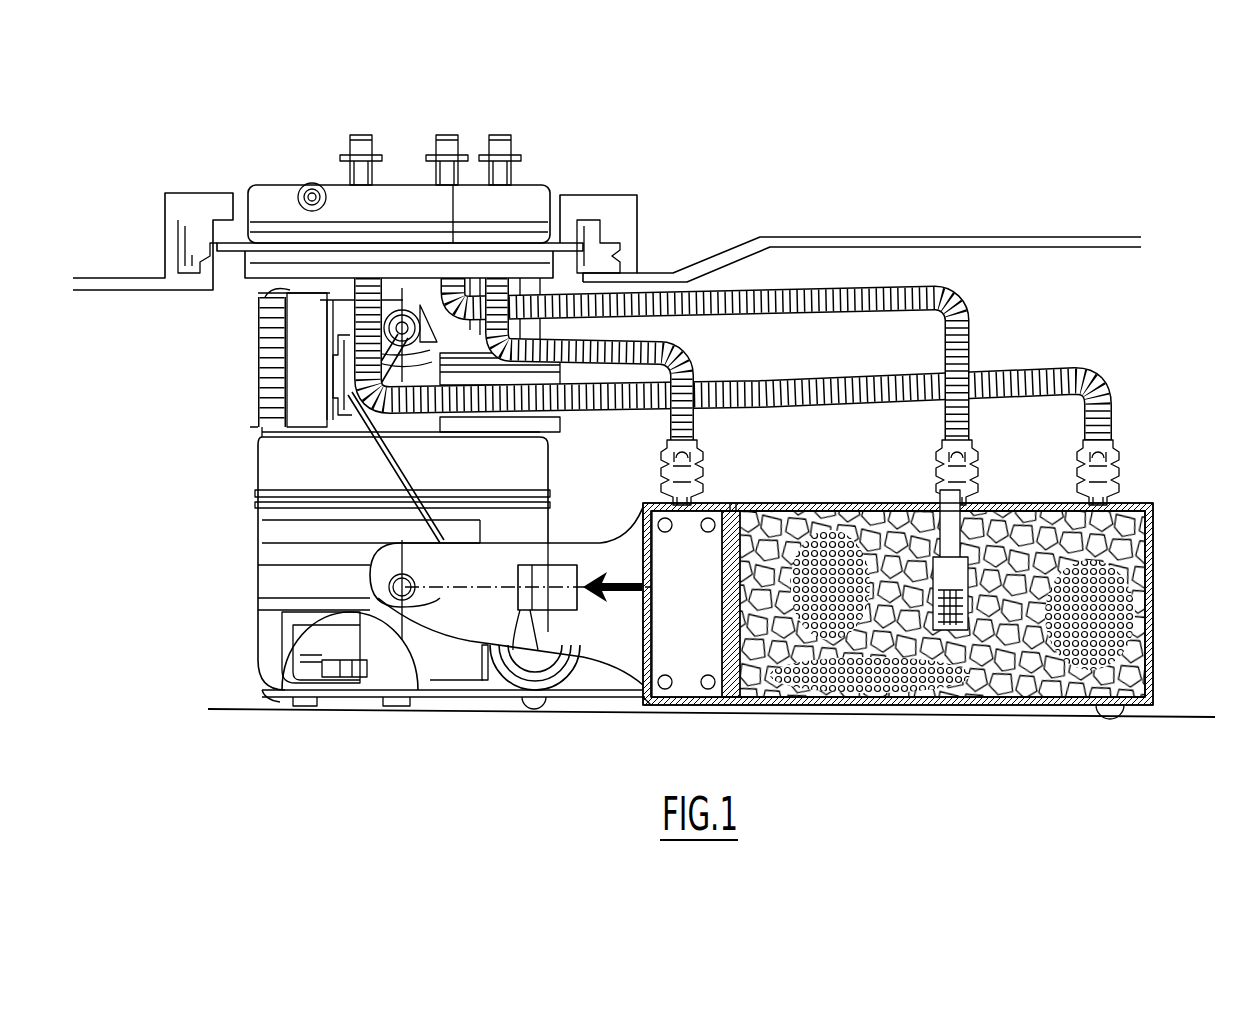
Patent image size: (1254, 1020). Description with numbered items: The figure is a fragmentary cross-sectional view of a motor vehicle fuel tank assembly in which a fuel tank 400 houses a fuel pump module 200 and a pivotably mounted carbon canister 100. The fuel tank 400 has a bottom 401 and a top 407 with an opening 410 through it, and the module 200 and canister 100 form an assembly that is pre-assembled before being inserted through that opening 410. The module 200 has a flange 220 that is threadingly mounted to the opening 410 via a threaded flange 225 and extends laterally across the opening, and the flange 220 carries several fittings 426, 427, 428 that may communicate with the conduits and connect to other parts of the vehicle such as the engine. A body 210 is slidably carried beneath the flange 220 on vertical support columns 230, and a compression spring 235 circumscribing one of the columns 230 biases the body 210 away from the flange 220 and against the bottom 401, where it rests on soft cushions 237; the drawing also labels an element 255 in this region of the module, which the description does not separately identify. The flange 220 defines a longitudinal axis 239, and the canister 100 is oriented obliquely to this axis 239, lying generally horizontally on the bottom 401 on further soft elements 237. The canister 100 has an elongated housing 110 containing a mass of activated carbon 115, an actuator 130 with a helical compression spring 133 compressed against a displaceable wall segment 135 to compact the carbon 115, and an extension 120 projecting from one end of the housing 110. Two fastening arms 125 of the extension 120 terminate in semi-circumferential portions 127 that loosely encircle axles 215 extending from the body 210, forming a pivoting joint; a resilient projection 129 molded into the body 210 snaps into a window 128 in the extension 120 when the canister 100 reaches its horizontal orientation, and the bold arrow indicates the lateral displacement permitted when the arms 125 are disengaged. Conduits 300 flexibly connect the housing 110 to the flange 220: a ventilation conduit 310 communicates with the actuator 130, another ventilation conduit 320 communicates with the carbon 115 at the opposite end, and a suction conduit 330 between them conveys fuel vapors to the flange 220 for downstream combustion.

The carbon canister 100 is at (942, 617).
The housing 110 is at (880, 697).
The activated carbon 115 is at (1003, 650).
The extension 120 is at (613, 697).
The fastening arms 125 is at (378, 620).
The semi-circumferential portions 127 is at (368, 615).
The window 128 is at (557, 600).
The projection 129 is at (493, 647).
The actuator 130 is at (712, 690).
The helical compression spring 133 is at (705, 705).
The wall segment 135 is at (737, 507).
The fuel pump module 200 is at (429, 449).
The body 210 is at (280, 630).
The axles 215 is at (390, 578).
The flange 220 is at (400, 173).
The threaded flange 225 is at (626, 250).
The columns 230 is at (286, 368).
The compression spring 235 is at (632, 322).
The cushions 237 is at (275, 712).
The longitudinal axis 239 is at (272, 294).
The connecting rod 255 is at (542, 372).
The conduits 300 is at (775, 389).
The ventilation conduit 310 is at (706, 373).
The ventilation conduit 320 is at (1084, 378).
The suction conduit 330 is at (965, 318).
The fuel tank 400 is at (1014, 232).
The bottom 401 is at (212, 709).
The top 407 is at (97, 286).
The opening 410 is at (609, 222).
The fitting 426 is at (366, 140).
The fitting 427 is at (448, 140).
The fitting 428 is at (500, 142).